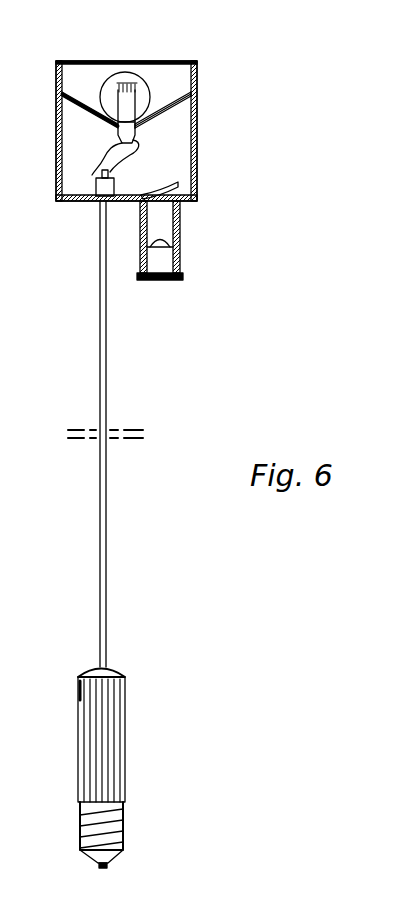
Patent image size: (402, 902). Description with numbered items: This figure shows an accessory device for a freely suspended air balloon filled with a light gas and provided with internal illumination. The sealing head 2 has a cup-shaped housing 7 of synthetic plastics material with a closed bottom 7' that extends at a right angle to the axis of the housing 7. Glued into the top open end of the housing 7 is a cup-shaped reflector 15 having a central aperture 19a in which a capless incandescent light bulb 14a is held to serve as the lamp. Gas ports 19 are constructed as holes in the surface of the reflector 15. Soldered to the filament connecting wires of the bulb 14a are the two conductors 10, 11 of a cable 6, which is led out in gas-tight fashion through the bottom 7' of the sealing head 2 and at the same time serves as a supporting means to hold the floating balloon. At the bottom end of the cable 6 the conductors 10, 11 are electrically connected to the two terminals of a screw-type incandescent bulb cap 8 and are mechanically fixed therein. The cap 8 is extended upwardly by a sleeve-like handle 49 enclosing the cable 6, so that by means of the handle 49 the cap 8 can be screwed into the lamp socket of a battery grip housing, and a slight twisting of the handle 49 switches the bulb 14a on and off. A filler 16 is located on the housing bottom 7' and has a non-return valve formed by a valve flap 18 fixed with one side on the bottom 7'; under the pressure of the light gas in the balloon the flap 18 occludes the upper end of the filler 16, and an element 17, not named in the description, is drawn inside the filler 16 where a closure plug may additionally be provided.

The sealing head 2 is at (202, 120).
The cable 6 is at (107, 367).
The cup-shaped housing 7 is at (157, 131).
The closed bottom 7' is at (52, 234).
The screw-type incandescent bulb cap 8 is at (120, 817).
The conductor 10 is at (98, 160).
The conductor 11 is at (125, 158).
The capless incandescent light bulb 14a is at (125, 73).
The cup-shaped reflector 15 is at (85, 120).
The filler 16 is at (180, 227).
The photosensor 17 is at (160, 258).
The valve flap 18 is at (178, 184).
The gas ports 19 is at (92, 118).
The central aperture 19a is at (141, 130).
The sleeve-like handle 49 is at (117, 708).